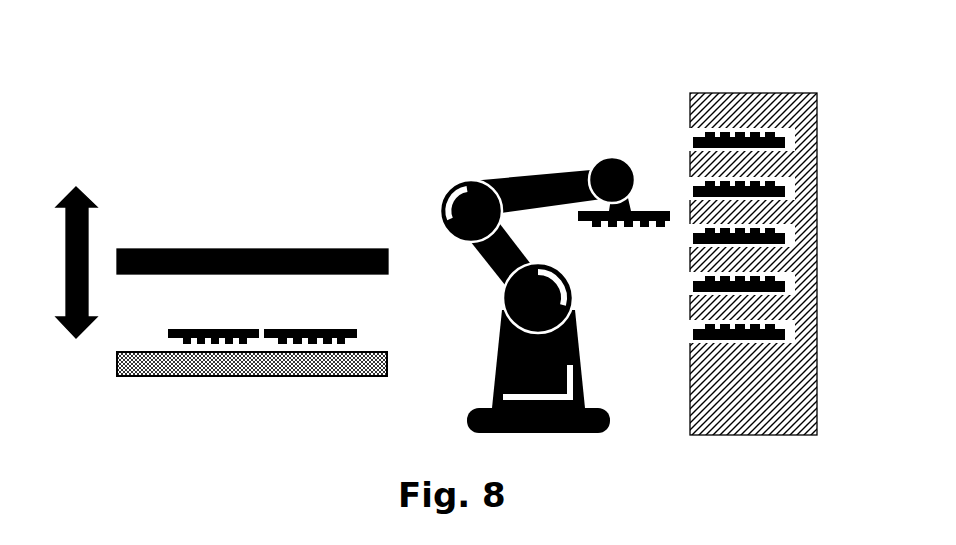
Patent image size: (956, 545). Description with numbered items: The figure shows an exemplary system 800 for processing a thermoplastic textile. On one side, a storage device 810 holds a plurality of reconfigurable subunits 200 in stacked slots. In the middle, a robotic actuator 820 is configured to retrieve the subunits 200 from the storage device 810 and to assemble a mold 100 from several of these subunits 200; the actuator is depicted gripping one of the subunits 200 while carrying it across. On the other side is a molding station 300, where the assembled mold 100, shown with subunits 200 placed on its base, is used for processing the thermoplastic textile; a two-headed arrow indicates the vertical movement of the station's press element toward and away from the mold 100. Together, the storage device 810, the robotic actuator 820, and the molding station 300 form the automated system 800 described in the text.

The system 800 is at (325, 127).
The molding station 300 is at (170, 210).
The mold 100 is at (258, 351).
The subunits 200 is at (216, 342).
The robotic actuator 820 is at (478, 313).
The storage device 810 is at (752, 110).